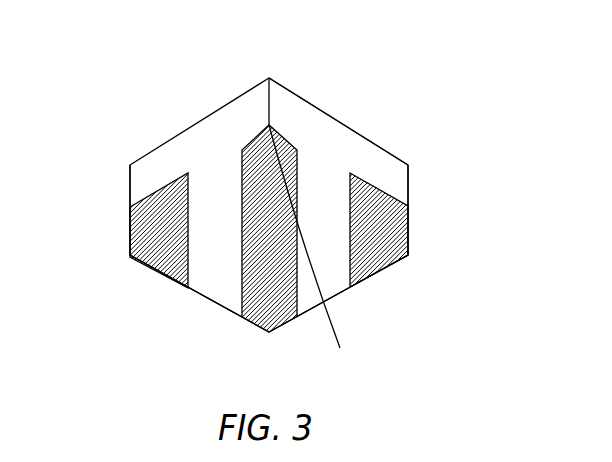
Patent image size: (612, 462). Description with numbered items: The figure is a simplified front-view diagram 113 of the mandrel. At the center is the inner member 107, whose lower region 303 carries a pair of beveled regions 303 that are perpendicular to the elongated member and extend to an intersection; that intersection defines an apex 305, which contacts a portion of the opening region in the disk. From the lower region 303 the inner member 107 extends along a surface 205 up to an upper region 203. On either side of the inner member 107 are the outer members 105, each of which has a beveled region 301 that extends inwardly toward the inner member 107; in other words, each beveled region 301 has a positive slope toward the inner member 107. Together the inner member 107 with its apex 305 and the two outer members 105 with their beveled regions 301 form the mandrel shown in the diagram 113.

The front-view diagram 113 is at (402, 82).
The upper region 203 is at (269, 77).
The surface 205 is at (285, 107).
The beveled region 301 is at (162, 193).
The outer member 105 is at (138, 237).
The inner member 107 is at (261, 318).
The lower region 303 is at (257, 132).
The apex 305 is at (316, 255).